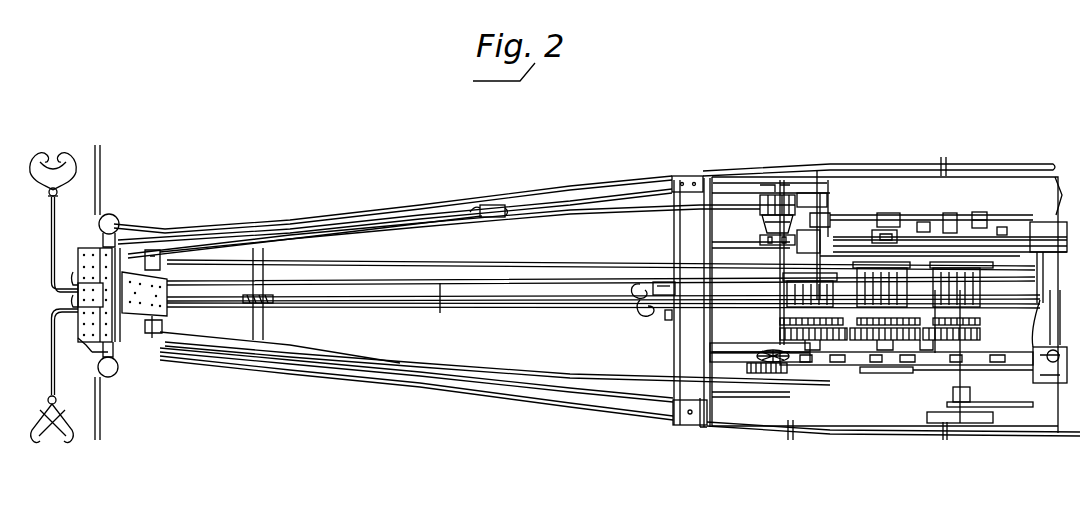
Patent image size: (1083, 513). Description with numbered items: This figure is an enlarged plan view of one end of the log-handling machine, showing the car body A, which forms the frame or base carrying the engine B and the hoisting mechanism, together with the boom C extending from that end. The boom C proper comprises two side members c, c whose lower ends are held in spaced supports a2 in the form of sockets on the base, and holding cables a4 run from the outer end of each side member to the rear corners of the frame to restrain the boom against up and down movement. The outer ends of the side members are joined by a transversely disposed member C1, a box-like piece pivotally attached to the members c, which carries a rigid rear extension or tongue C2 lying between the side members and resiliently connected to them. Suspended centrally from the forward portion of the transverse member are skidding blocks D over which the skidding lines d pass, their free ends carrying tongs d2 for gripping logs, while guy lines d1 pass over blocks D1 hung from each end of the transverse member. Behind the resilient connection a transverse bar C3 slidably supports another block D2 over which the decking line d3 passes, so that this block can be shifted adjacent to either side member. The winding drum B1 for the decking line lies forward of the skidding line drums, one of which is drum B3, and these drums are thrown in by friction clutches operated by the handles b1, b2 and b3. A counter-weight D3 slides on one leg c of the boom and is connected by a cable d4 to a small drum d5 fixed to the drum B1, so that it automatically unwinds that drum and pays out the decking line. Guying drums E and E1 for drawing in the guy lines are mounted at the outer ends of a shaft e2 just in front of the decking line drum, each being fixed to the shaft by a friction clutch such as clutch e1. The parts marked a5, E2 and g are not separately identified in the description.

The car body A is at (889, 301).
The spaced supports a2 is at (670, 178).
The holding cables a4 is at (318, 224).
The horizontal cable a5 is at (775, 267).
The counter-weight cable d4 is at (424, 216).
The side members c is at (333, 236).
The decking line d3 is at (356, 308).
The skidding lines d is at (28, 240).
The guy lines d1 is at (100, 160).
The tongs d2 is at (44, 183).
The blocks D1 is at (113, 217).
The skidding blocks D is at (72, 287).
The boom C is at (538, 212).
The transversely disposed member C1 is at (80, 320).
The rear extension C2 is at (165, 325).
The supporting member C3 is at (270, 294).
The block D2 is at (248, 306).
The weight D3 is at (490, 205).
The guying drum E is at (775, 179).
The handle b1 is at (765, 230).
The handle b2 is at (884, 222).
The handle b3 is at (982, 209).
The winding drum B1 is at (792, 306).
The winding drum B3 is at (985, 300).
The engine B is at (1054, 323).
The clutch bar E2 is at (887, 310).
The guying drum E1 is at (767, 325).
The friction clutch e1 is at (747, 367).
The shaft e2 is at (772, 320).
The cable clamp g is at (651, 301).
The drum d5 is at (416, 375).